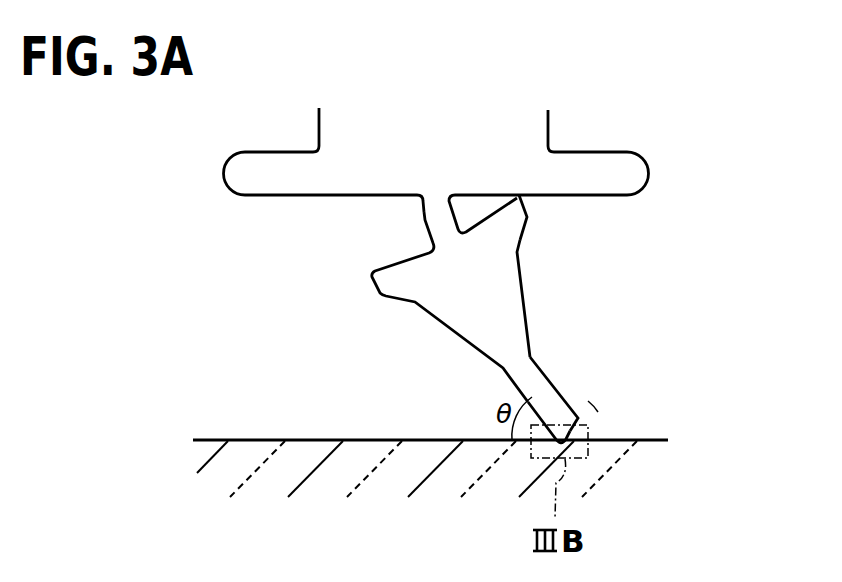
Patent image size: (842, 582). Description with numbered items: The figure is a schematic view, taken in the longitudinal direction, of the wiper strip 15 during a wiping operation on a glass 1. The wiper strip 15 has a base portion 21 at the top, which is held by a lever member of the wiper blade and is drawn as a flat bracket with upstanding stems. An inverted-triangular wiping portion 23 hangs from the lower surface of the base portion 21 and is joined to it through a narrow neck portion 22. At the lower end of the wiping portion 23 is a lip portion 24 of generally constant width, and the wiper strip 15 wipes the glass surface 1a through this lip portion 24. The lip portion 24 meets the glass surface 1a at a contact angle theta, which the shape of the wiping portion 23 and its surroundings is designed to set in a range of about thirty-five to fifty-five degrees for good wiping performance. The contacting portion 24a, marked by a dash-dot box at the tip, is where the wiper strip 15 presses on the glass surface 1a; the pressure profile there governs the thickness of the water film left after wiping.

The glass 1 is at (636, 498).
The glass surface 1a is at (652, 440).
The wiper strip 15 is at (633, 88).
The base portion 21 is at (513, 122).
The neck portion 22 is at (423, 213).
The wiping portion 23 is at (522, 290).
The lip portion 24 is at (545, 373).
The contacting portion 24a is at (568, 427).